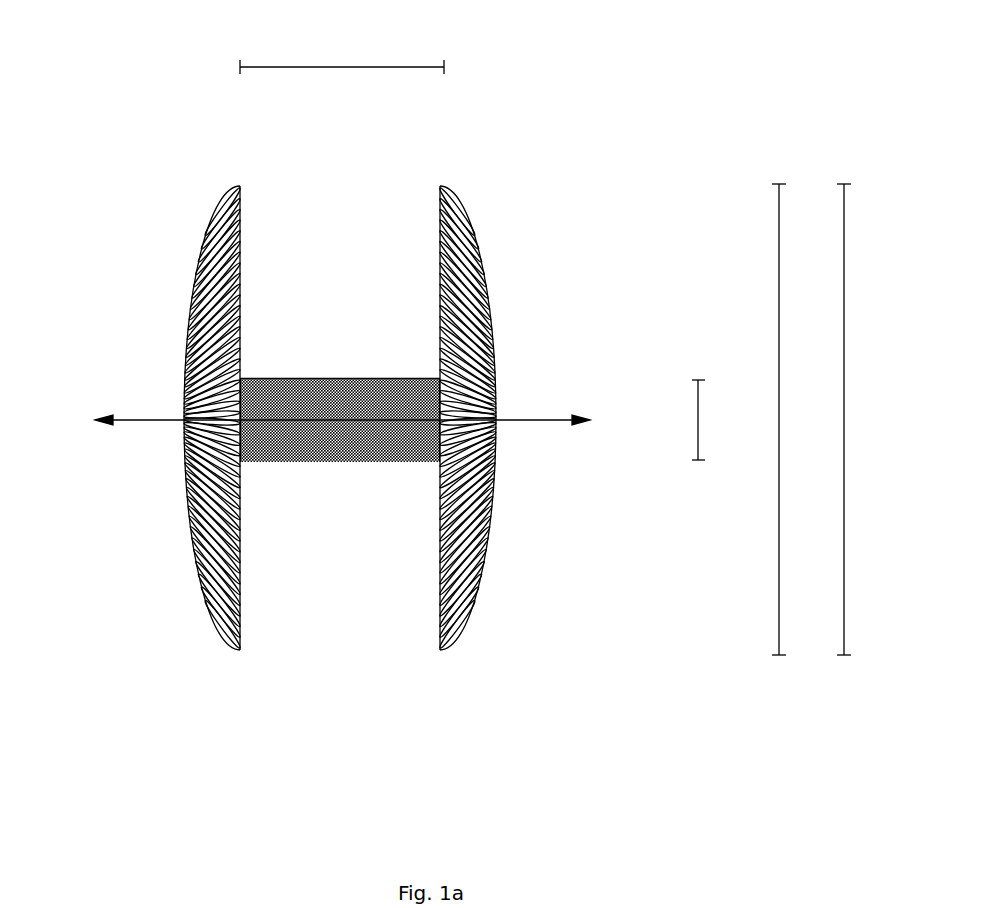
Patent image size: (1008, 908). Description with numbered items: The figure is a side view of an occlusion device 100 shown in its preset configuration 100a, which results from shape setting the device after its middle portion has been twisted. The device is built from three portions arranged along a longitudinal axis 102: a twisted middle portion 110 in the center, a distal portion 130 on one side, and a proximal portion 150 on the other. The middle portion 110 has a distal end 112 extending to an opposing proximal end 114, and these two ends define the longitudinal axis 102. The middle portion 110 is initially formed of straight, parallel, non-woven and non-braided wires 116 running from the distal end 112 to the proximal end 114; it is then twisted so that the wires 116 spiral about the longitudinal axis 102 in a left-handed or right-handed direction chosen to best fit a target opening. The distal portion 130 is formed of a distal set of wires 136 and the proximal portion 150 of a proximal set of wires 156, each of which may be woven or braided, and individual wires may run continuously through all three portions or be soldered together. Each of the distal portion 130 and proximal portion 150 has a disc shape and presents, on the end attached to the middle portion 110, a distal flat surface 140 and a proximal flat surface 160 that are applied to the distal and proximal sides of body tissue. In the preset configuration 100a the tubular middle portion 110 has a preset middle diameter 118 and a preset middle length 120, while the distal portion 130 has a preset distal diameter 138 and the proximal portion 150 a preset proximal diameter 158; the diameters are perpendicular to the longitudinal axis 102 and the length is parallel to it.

The occlusion device 100 is at (345, 342).
The preset configuration 100a is at (340, 738).
The longitudinal axis 102 is at (127, 418).
The twisted middle portion 110 is at (340, 421).
The distal end 112 is at (243, 463).
The proximal end 114 is at (437, 463).
The wires 116 is at (292, 380).
The preset middle diameter 118 is at (719, 420).
The preset middle length 120 is at (342, 54).
The distal portion 130 is at (190, 378).
The distal set of wires 136 is at (185, 478).
The preset distal diameter 138 is at (796, 419).
The distal flat surface 140 is at (240, 190).
The proximal portion 150 is at (505, 378).
The proximal set of wires 156 is at (497, 368).
The preset proximal diameter 158 is at (862, 419).
The proximal flat surface 160 is at (440, 190).